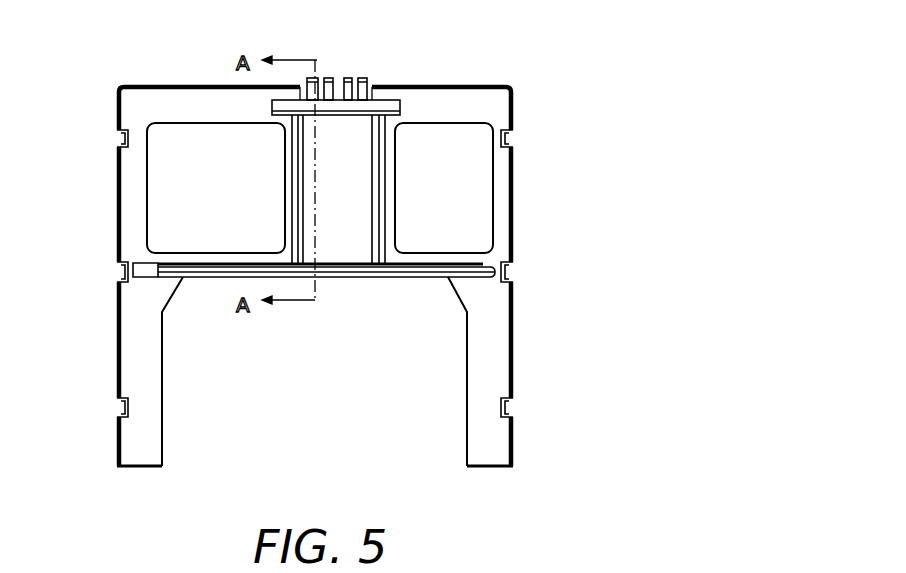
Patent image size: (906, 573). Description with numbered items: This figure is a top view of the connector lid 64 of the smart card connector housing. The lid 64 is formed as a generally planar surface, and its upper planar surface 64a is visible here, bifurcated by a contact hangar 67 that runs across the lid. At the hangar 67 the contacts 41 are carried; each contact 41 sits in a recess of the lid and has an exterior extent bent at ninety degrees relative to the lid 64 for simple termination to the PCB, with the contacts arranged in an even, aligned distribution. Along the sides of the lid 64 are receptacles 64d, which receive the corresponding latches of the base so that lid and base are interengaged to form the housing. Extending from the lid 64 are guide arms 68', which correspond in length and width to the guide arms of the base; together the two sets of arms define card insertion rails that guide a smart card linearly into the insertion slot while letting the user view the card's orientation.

The lid 64 is at (510, 45).
The upper planar surface 64a is at (167, 100).
The receptacles 64d is at (122, 140).
The contact 41 is at (331, 78).
The contact hangar 67 is at (350, 133).
The guide arms 68' is at (363, 371).